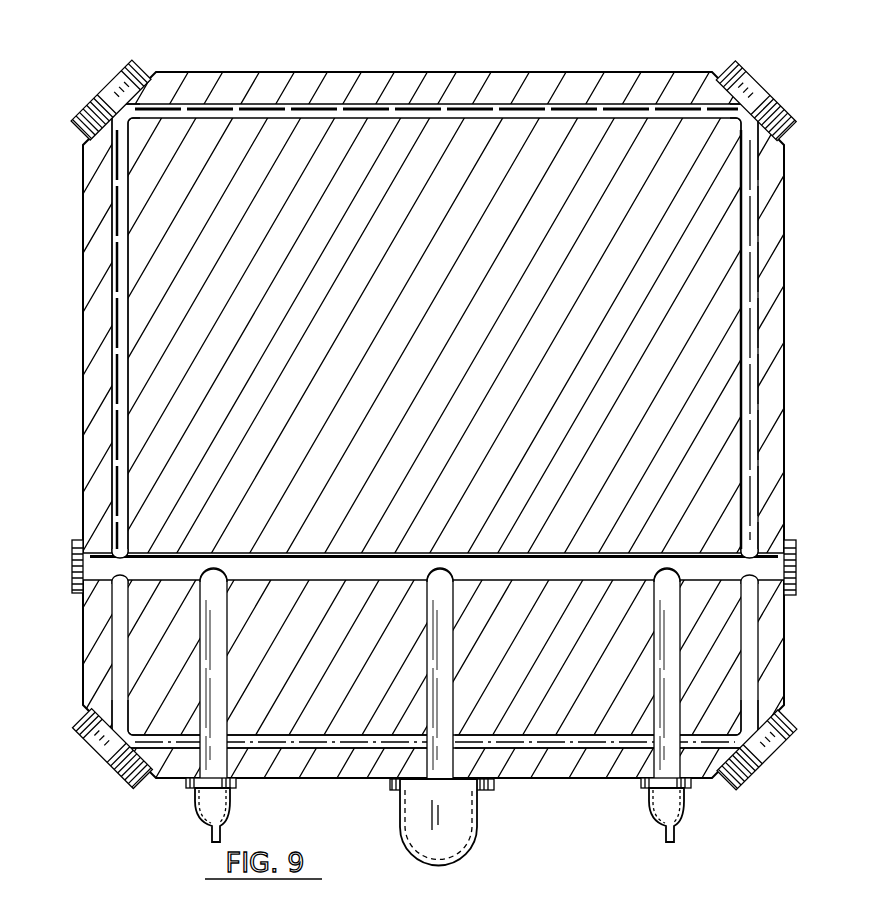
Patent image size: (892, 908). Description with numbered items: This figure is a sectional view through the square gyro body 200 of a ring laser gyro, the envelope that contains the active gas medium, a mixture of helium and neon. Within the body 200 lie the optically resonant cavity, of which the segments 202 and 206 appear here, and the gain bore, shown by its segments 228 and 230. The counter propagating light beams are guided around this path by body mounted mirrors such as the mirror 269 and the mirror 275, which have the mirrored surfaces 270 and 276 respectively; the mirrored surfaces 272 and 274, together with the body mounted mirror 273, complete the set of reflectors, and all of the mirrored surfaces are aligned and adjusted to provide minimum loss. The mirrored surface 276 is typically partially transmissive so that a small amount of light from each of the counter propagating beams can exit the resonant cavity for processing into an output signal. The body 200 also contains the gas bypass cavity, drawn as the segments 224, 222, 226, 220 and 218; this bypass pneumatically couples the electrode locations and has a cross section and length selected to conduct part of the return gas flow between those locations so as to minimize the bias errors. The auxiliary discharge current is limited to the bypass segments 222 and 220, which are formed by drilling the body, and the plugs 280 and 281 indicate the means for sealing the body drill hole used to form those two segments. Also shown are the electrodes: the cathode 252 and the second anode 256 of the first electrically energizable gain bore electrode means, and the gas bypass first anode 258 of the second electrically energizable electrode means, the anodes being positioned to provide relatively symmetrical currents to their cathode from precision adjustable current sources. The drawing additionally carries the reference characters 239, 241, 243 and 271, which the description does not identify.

The square body 200 is at (385, 72).
The resonant cavity segment 202 is at (118, 375).
The resonant cavity segment 206 is at (752, 355).
The gas bypass cavity segment 218 is at (683, 732).
The gas bypass cavity segment 220 is at (675, 530).
The gas bypass cavity segment 222 is at (436, 548).
The gas bypass cavity segment 224 is at (233, 728).
The gas bypass cavity segment 226 is at (457, 728).
The gain bore segment 228 is at (212, 730).
The gain bore segment 230 is at (672, 725).
The rounded passage end 239 is at (205, 568).
The rounded passage end 241 is at (425, 580).
The rounded passage end 243 is at (655, 580).
The cathode 252 is at (480, 806).
The second anode 256 is at (686, 800).
The gas bypass first anode 258 is at (229, 800).
The body mounted mirror 269 is at (100, 757).
The mirrored surface 270 is at (136, 730).
The upper left corner bolt 271 is at (100, 92).
The mirrored surface 272 is at (160, 118).
The body mounted mirror 273 is at (770, 93).
The mirrored surface 274 is at (740, 113).
The body mounted mirror 275 is at (772, 762).
The mirrored surface 276 is at (755, 728).
The plug 280 is at (72, 566).
The plug 281 is at (796, 558).